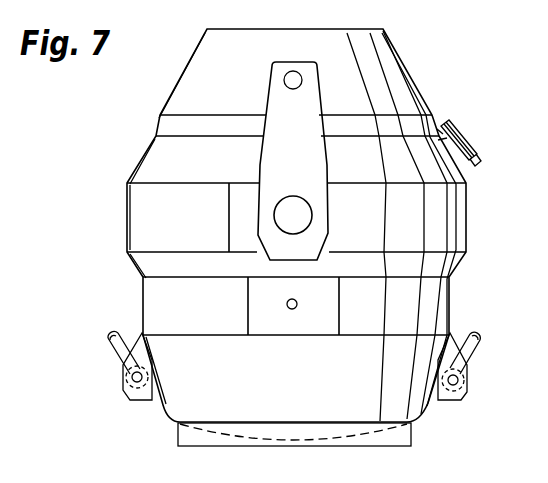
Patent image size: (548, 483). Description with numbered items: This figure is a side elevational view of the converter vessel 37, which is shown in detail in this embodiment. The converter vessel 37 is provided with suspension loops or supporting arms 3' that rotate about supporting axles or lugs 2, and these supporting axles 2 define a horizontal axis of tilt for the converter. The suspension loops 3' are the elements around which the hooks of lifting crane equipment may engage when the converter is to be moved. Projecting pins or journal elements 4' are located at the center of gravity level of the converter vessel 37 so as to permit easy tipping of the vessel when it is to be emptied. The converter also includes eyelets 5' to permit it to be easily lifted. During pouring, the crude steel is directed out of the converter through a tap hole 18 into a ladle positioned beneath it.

The converter vessel 37 is at (392, 73).
The tap hole 18 is at (462, 143).
The suspension loop 3' is at (315, 161).
The supporting axle 2 is at (293, 215).
The journal element 4' is at (312, 313).
The eyelet 5' is at (305, 346).